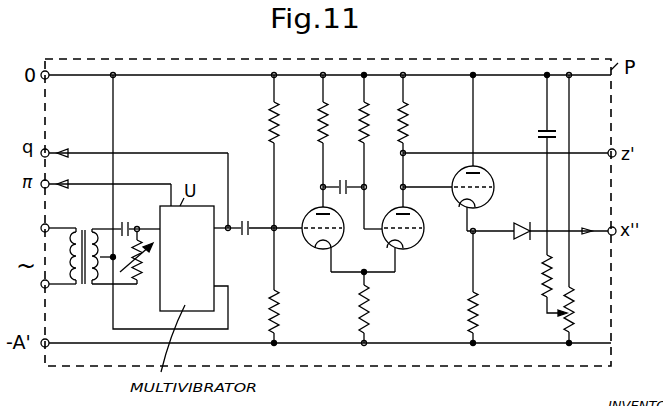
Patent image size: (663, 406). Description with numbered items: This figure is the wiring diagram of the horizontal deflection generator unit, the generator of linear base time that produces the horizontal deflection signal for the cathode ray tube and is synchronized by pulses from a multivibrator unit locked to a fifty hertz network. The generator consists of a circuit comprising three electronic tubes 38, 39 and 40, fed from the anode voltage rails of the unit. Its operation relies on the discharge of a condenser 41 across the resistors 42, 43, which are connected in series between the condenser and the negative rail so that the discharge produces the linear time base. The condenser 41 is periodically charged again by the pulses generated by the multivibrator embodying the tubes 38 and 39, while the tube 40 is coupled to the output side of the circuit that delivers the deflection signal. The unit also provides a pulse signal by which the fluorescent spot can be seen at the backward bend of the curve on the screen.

The electronic tube 38 is at (312, 208).
The electronic tube 39 is at (423, 228).
The electronic tube 40 is at (496, 172).
The condenser 41 is at (542, 131).
The resistor 42 is at (539, 285).
The resistor 43 is at (583, 209).